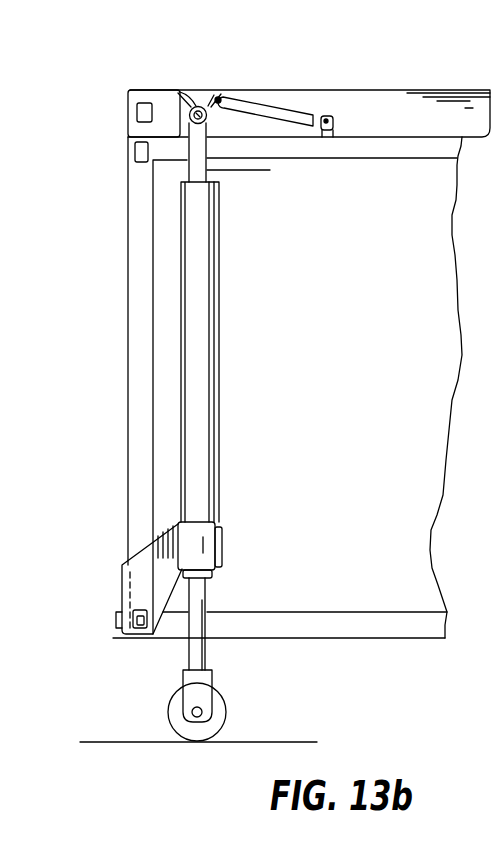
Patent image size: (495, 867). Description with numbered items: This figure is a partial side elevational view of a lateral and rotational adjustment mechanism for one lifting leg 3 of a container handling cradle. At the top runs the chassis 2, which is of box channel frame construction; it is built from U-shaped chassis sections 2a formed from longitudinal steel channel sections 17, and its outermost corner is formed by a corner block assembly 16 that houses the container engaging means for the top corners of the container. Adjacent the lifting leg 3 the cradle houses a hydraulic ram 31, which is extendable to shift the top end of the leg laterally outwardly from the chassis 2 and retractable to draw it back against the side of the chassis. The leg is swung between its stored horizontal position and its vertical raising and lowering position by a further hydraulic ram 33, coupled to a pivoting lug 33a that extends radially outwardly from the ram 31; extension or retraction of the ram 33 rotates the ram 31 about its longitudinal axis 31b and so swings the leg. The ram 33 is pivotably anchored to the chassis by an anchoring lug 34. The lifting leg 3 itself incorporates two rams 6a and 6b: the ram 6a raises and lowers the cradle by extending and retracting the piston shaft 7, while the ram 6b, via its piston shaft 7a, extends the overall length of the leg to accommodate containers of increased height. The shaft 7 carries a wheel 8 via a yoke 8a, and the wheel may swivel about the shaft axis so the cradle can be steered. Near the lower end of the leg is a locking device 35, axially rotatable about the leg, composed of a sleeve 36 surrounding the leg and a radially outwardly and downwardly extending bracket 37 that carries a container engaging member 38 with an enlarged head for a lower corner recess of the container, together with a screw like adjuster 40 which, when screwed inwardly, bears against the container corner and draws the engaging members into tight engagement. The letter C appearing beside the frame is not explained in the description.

The chassis 2 is at (454, 84).
The U-shaped chassis section 2a is at (418, 122).
The lifting leg 3 is at (176, 331).
The ram 6a is at (218, 462).
The ram 6b is at (197, 218).
The piston shaft 7 is at (207, 642).
The piston shaft 7a is at (187, 166).
The wheel 8 is at (175, 718).
The yoke 8a is at (203, 702).
The corner block assembly 16 is at (140, 132).
The longitudinal steel channel section 17 is at (404, 93).
The hydraulic ram 31 is at (178, 96).
The longitudinal axis 31b is at (201, 99).
The hydraulic ram 33 is at (278, 107).
The pivoting lug 33a is at (208, 97).
The anchoring lug 34 is at (328, 122).
The locking device 35 is at (120, 575).
The sleeve 36 is at (223, 535).
The bracket 37 is at (147, 560).
The container engaging member 38 is at (144, 635).
The screw like adjuster 40 is at (115, 623).
The column C is at (140, 283).